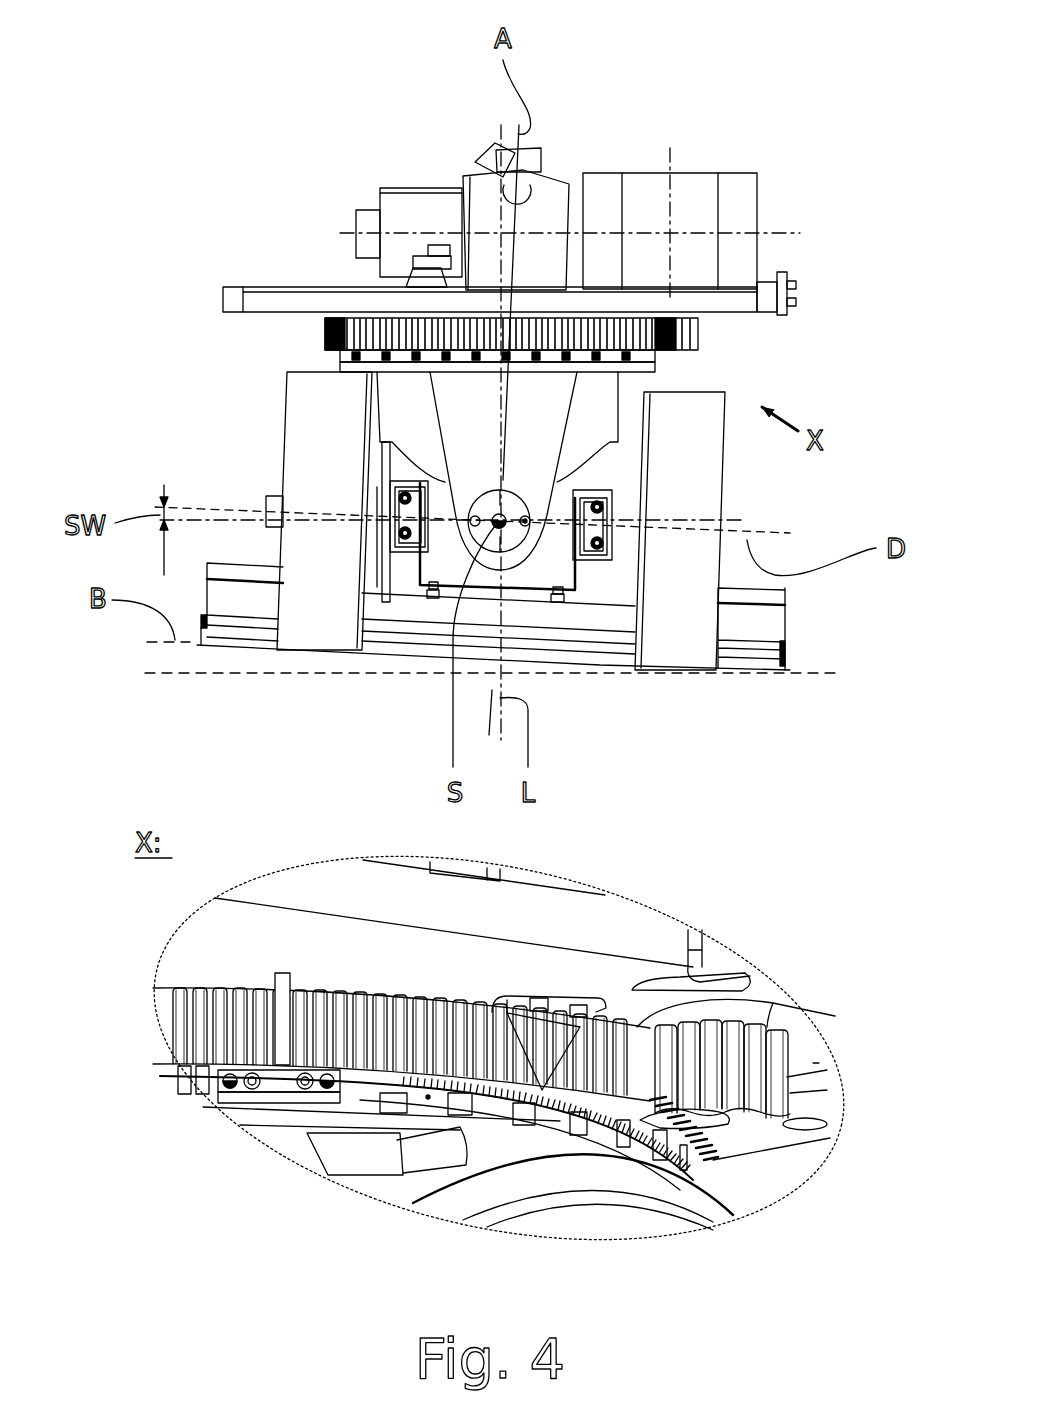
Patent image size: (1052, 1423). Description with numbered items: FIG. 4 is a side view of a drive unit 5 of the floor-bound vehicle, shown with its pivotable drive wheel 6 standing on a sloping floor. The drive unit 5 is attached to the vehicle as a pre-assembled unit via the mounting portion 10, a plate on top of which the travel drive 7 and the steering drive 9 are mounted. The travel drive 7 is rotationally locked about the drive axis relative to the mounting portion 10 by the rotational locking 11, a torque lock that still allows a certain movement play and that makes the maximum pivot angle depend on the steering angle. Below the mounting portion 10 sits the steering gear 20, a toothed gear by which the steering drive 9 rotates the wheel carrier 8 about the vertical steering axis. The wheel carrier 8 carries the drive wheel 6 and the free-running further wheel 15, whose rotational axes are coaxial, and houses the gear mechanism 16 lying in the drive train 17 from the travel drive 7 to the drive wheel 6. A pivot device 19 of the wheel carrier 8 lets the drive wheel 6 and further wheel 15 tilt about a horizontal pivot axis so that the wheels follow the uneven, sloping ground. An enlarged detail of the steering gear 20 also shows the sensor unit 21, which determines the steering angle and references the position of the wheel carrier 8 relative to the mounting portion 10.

The drive unit 5 is at (756, 110).
The drive wheel 6 is at (678, 622).
The travel drive 7 is at (593, 128).
The wheel carrier 8 is at (480, 407).
The steering drive 9 is at (360, 160).
The mounting portion 10 is at (241, 287).
The rotational locking 11 is at (398, 262).
The further wheel 15 is at (308, 450).
The gear mechanism 16 is at (550, 615).
The drive train 17 is at (403, 583).
The pivot device 19 is at (452, 540).
The steering gear 20 is at (738, 343).
The sensor unit 21 is at (258, 1105).